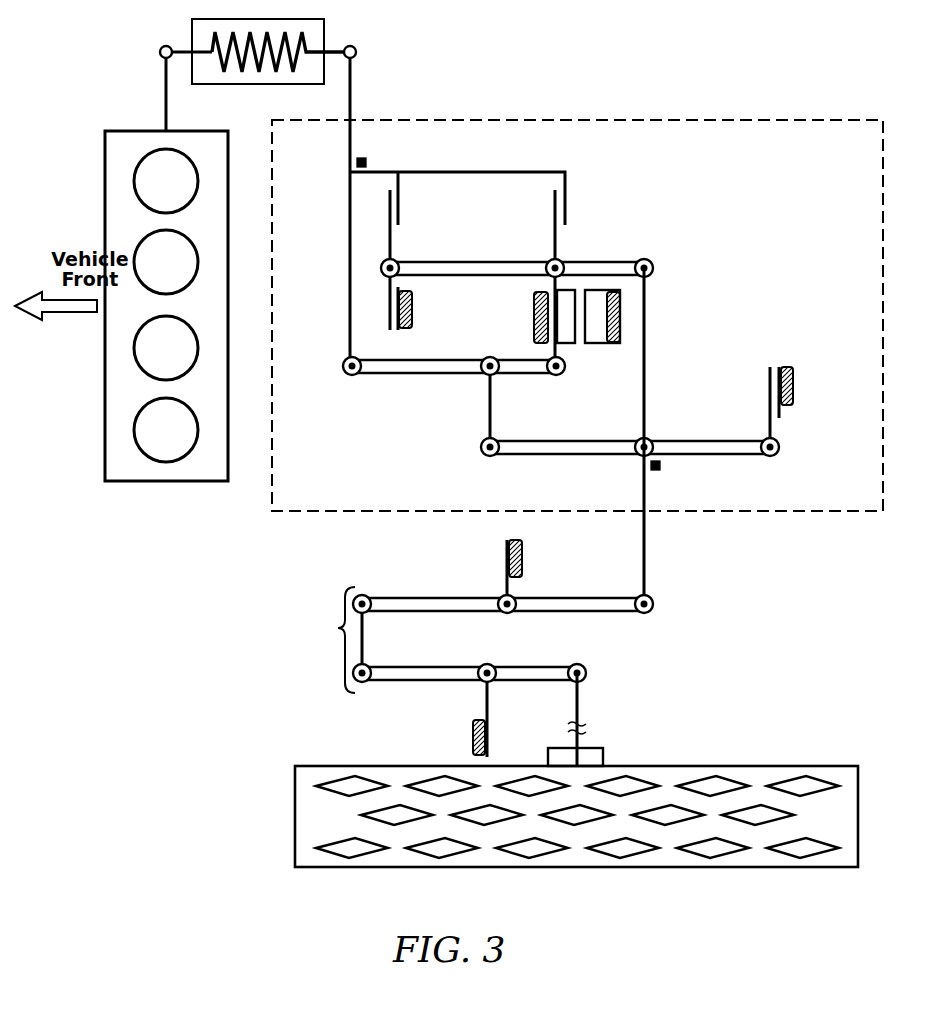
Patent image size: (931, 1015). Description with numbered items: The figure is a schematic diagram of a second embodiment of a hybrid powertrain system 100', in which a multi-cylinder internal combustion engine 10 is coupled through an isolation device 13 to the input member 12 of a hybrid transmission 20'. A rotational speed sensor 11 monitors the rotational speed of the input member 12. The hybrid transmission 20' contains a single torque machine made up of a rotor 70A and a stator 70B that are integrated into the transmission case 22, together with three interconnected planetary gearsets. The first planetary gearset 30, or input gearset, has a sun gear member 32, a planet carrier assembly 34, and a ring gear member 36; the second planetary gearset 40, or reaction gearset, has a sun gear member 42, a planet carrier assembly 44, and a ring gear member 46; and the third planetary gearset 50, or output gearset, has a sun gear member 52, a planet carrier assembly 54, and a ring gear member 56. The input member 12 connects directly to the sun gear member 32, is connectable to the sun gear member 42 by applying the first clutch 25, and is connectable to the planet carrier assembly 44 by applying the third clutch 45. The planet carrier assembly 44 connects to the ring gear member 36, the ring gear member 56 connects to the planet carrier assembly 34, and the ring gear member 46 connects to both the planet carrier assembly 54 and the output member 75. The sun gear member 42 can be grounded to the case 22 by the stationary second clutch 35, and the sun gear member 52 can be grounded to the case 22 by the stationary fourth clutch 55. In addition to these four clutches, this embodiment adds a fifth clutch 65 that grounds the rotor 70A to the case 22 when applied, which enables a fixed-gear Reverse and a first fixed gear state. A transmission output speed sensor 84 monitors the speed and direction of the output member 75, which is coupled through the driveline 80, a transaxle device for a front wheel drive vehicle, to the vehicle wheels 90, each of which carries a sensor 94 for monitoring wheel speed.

The engine 10 is at (121, 126).
The powertrain system 100' is at (137, 296).
The rotational speed sensor 11 is at (370, 160).
The input member 12 is at (352, 94).
The isolation device 13 is at (324, 42).
The hybrid transmission 20' is at (527, 340).
The case 22 is at (533, 328).
The clutch C1 25 is at (409, 216).
The first planetary gearset 30 is at (344, 358).
The sun gear member 32 is at (347, 372).
The planet carrier assembly 34 is at (498, 372).
The clutch C2 35 is at (420, 308).
The ring gear member 36 is at (563, 372).
The second planetary gearset 40 is at (376, 268).
The sun gear member 42 is at (398, 265).
The planet carrier assembly 44 is at (562, 265).
The clutch C3 45 is at (575, 220).
The ring gear member 46 is at (652, 265).
The third planetary gearset 50 is at (479, 440).
The sun gear member 52 is at (778, 452).
The planet carrier assembly 54 is at (652, 444).
The clutch C4 55 is at (800, 392).
The ring gear member 56 is at (482, 452).
The clutch C5 65 is at (525, 315).
The rotor 70A is at (570, 338).
The stator 70B is at (598, 343).
The output member 75 is at (646, 545).
The driveline 80 is at (336, 628).
The transmission output speed sensor 84 is at (664, 467).
The vehicle wheels 90 is at (292, 791).
The sensor 94 is at (600, 760).